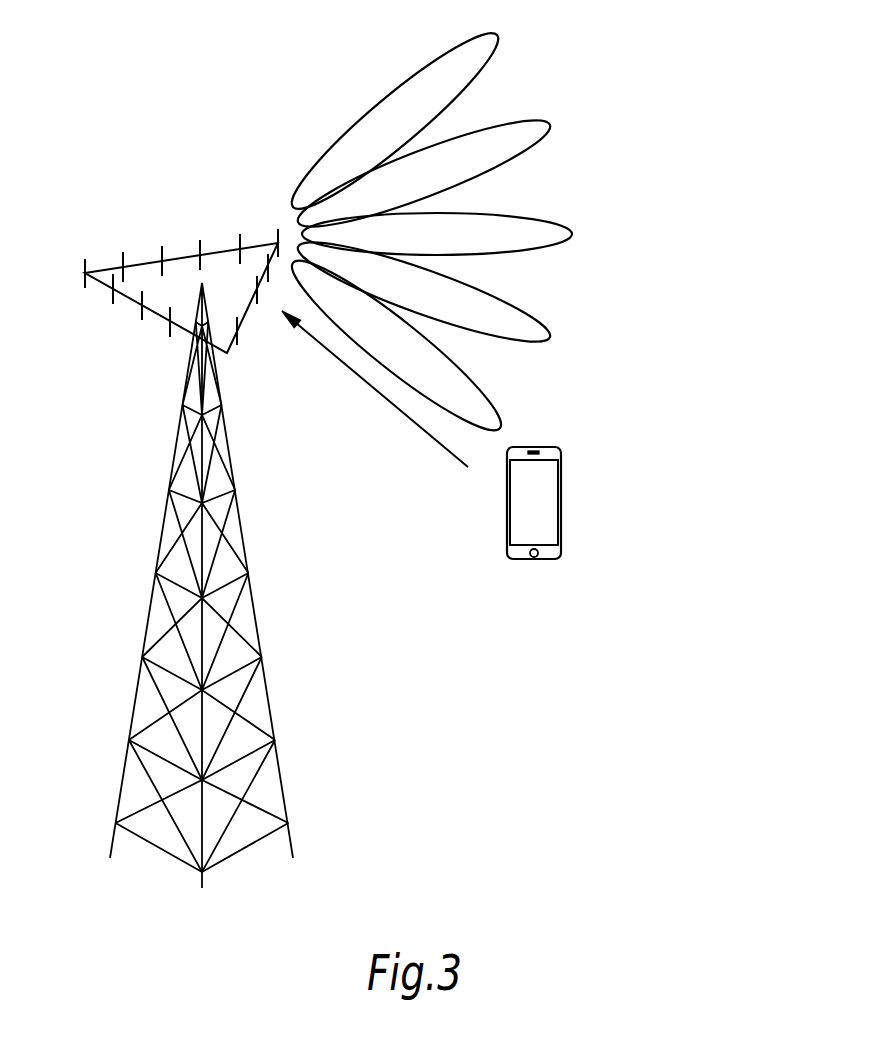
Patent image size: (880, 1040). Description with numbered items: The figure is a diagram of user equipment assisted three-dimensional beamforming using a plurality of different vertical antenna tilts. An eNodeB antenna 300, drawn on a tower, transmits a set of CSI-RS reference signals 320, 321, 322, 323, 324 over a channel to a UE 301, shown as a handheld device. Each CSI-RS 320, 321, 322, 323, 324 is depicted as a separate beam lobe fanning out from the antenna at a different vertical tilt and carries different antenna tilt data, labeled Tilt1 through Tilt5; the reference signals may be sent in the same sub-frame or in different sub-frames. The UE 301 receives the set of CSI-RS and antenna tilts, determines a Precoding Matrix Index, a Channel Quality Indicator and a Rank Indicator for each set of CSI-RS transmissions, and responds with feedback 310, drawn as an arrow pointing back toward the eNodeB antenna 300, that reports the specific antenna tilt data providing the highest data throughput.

The eNodeB antenna 300 is at (122, 262).
The UE 301 is at (562, 502).
The feedback 310 is at (403, 412).
The CSI-RS reference signal 320 is at (497, 36).
The CSI-RS reference signal 321 is at (550, 126).
The CSI-RS reference signal 322 is at (572, 234).
The CSI-RS reference signal 323 is at (550, 337).
The CSI-RS reference signal 324 is at (500, 428).